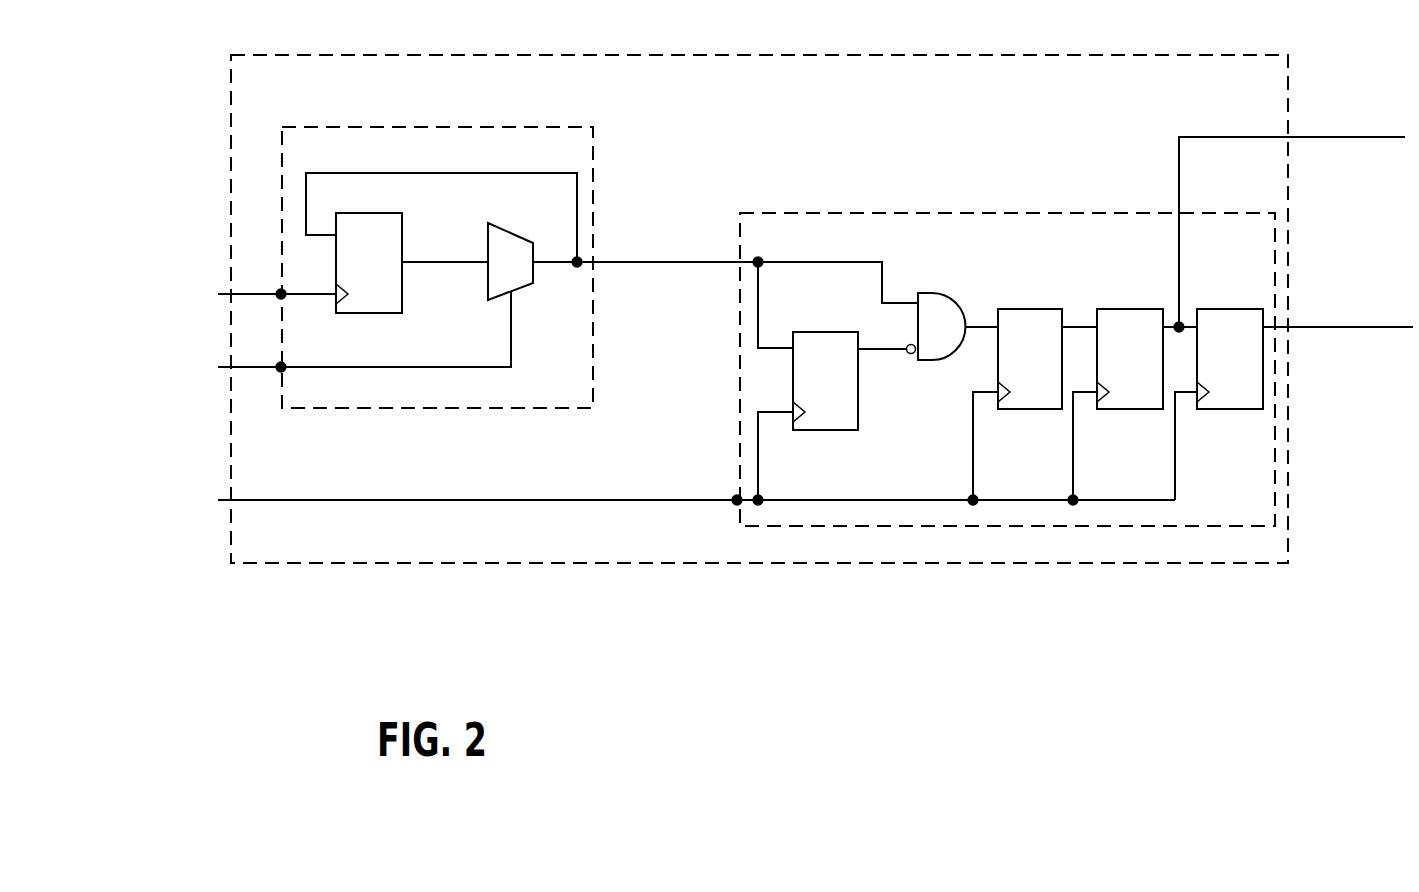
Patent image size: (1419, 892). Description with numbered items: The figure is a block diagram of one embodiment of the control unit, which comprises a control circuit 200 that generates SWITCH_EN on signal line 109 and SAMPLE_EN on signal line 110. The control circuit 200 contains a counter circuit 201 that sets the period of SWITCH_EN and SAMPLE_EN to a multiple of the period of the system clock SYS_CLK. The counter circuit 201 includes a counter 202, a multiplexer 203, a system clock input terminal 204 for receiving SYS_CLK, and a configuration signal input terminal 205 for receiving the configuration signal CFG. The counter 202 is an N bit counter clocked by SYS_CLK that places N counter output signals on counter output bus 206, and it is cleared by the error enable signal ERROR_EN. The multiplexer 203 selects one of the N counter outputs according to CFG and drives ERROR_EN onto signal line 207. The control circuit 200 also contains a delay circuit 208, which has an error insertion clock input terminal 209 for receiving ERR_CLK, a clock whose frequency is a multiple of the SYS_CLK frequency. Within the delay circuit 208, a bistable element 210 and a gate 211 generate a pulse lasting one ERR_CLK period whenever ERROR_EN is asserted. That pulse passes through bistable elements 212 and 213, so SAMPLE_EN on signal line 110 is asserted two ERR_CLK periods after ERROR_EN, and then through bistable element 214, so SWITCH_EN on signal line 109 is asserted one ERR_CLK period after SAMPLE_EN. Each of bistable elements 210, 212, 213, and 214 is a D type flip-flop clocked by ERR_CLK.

The control circuit 200 is at (1125, 99).
The counter circuit 201 is at (577, 394).
The counter 202 is at (387, 284).
The multiplexer 203 is at (529, 274).
The system clock input terminal 204 is at (225, 283).
The configuration signal input terminal 205 is at (335, 336).
The counter output bus 206 is at (445, 245).
The signal line 207 is at (612, 260).
The delay circuit 208 is at (1038, 250).
The error insertion clock input terminal 209 is at (656, 453).
The bistable element 210 is at (843, 396).
The gate 211 is at (951, 340).
The bistable element 212 is at (1048, 373).
The bistable element 213 is at (1148, 373).
The bistable element 214 is at (1248, 373).
The signal line 110 is at (1291, 222).
The signal line 109 is at (1338, 329).